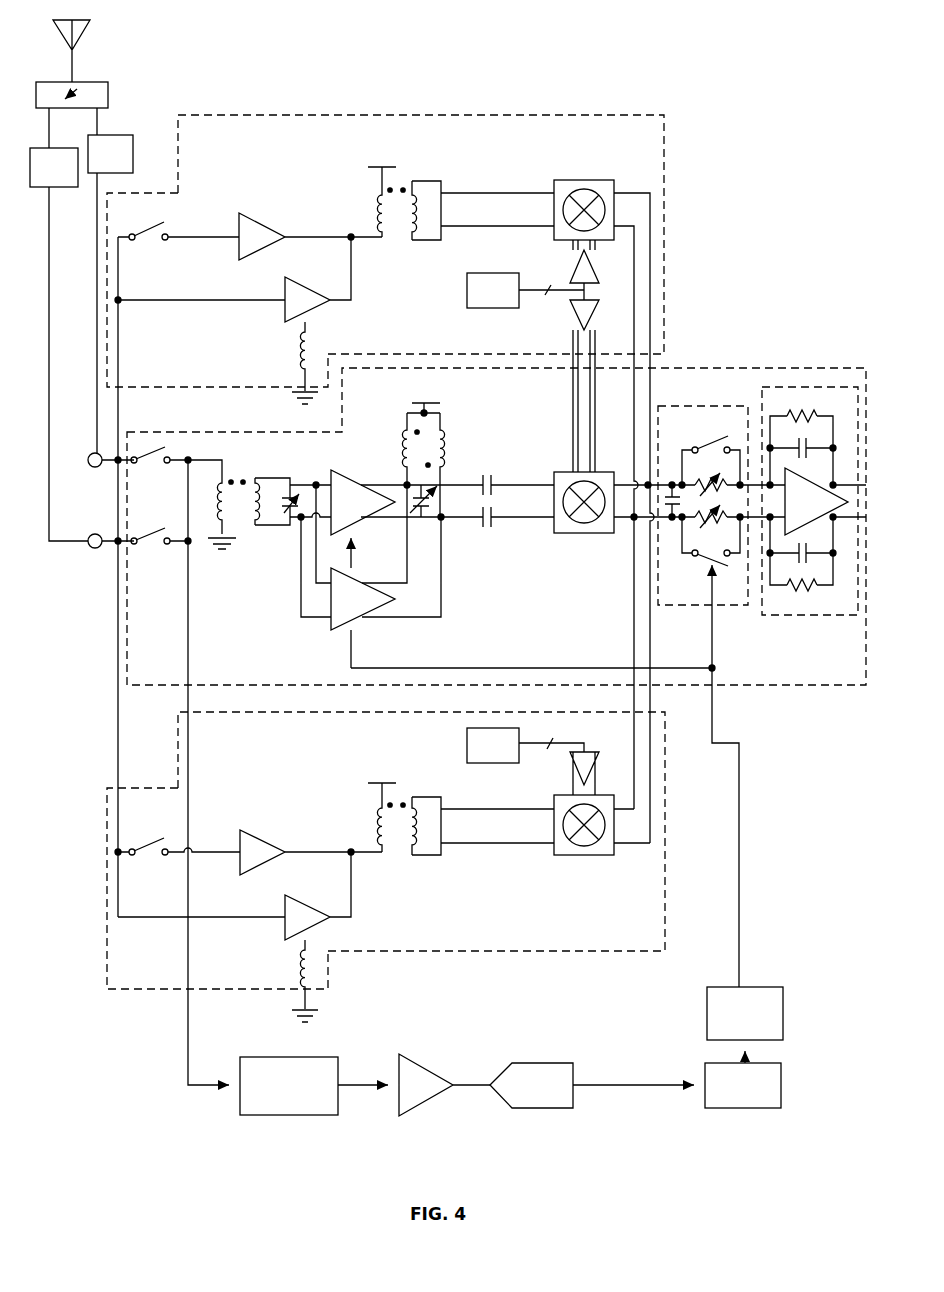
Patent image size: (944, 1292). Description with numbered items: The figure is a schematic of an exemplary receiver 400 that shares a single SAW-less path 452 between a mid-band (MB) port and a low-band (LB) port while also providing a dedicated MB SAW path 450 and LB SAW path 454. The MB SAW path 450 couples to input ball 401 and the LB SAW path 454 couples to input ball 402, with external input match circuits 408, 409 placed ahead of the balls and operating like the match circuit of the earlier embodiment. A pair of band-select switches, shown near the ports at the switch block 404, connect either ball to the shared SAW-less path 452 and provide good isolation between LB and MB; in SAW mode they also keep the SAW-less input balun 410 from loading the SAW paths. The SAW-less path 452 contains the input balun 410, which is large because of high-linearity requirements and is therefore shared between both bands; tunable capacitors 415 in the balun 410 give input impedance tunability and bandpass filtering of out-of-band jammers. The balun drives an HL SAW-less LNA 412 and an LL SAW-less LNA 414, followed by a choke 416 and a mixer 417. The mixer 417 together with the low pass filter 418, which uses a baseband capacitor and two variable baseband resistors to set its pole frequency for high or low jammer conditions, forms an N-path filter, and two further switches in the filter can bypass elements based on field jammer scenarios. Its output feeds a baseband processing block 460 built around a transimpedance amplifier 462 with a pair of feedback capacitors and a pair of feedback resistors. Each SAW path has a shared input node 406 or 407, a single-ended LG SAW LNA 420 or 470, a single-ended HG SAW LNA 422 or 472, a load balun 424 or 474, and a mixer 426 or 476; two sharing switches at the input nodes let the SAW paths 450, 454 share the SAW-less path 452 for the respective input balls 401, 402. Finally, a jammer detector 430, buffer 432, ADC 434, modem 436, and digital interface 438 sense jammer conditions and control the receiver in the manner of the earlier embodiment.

The receiver 400 is at (397, 468).
The input ball 401 is at (81, 460).
The input ball 402 is at (85, 542).
The band selection switches S3/S4 404 is at (190, 545).
The shared input node 406 is at (118, 300).
The shared input node 407 is at (118, 850).
The external input match circuit 408 is at (110, 154).
The external input match circuit 409 is at (54, 167).
The input balun 410 is at (259, 497).
The HL SAW-less LNA 412 is at (441, 491).
The LL SAW-less LNA 414 is at (506, 576).
The tunable capacitors 415 is at (427, 535).
The choke 416 is at (443, 449).
The mixer 417 is at (624, 516).
The low pass filter 418 is at (703, 406).
The single-ended LG SAW LNA 420 is at (310, 230).
The single-ended HG SAW LNA 422 is at (234, 320).
The load balun 424 is at (455, 209).
The mixer 426 is at (560, 498).
The jammer detector 430 is at (314, 1070).
The buffer 432 is at (444, 1071).
The ADC 434 is at (592, 1067).
The modem 436 is at (768, 1079).
The digital interface 438 is at (769, 1014).
The MB SAW path 450 is at (265, 114).
The SAW-less path 452 is at (768, 368).
The LB SAW path 454 is at (477, 951).
The baseband processing block 460 is at (787, 615).
The transimpedance amplifier 462 is at (816, 501).
The single-ended LG SAW LNA 470 is at (311, 832).
The single-ended HG SAW LNA 472 is at (234, 937).
The load balun 474 is at (455, 826).
The mixer 476 is at (558, 808).